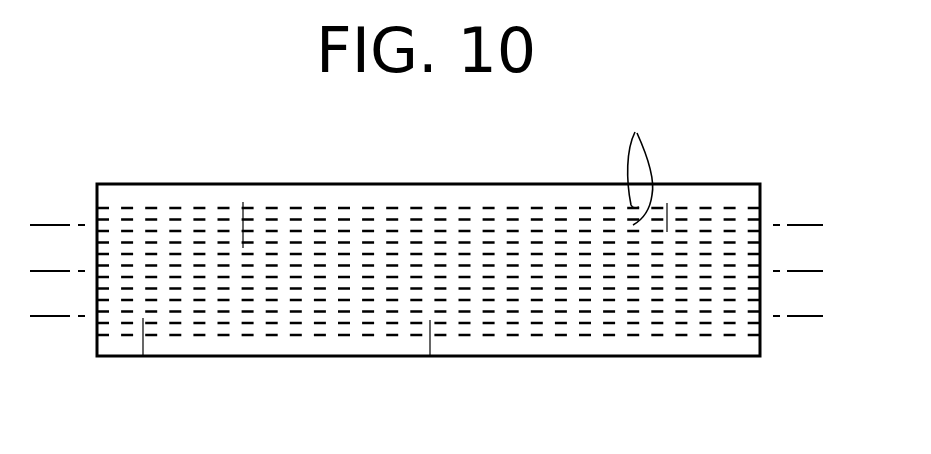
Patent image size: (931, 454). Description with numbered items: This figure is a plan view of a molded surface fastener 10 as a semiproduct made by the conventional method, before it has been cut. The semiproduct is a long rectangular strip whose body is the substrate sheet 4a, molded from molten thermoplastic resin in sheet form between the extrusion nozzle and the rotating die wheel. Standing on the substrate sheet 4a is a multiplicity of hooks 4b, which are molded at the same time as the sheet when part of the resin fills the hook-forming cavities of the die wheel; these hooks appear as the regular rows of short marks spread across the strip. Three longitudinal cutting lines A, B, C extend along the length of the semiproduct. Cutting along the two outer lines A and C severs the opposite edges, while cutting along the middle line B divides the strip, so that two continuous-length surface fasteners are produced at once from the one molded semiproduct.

The surface fastener 10 is at (563, 357).
The substrate sheet 4a is at (528, 191).
The hooks 4b is at (636, 162).
The cutting line A is at (442, 224).
The cutting line B is at (442, 270).
The cutting line C is at (442, 315).